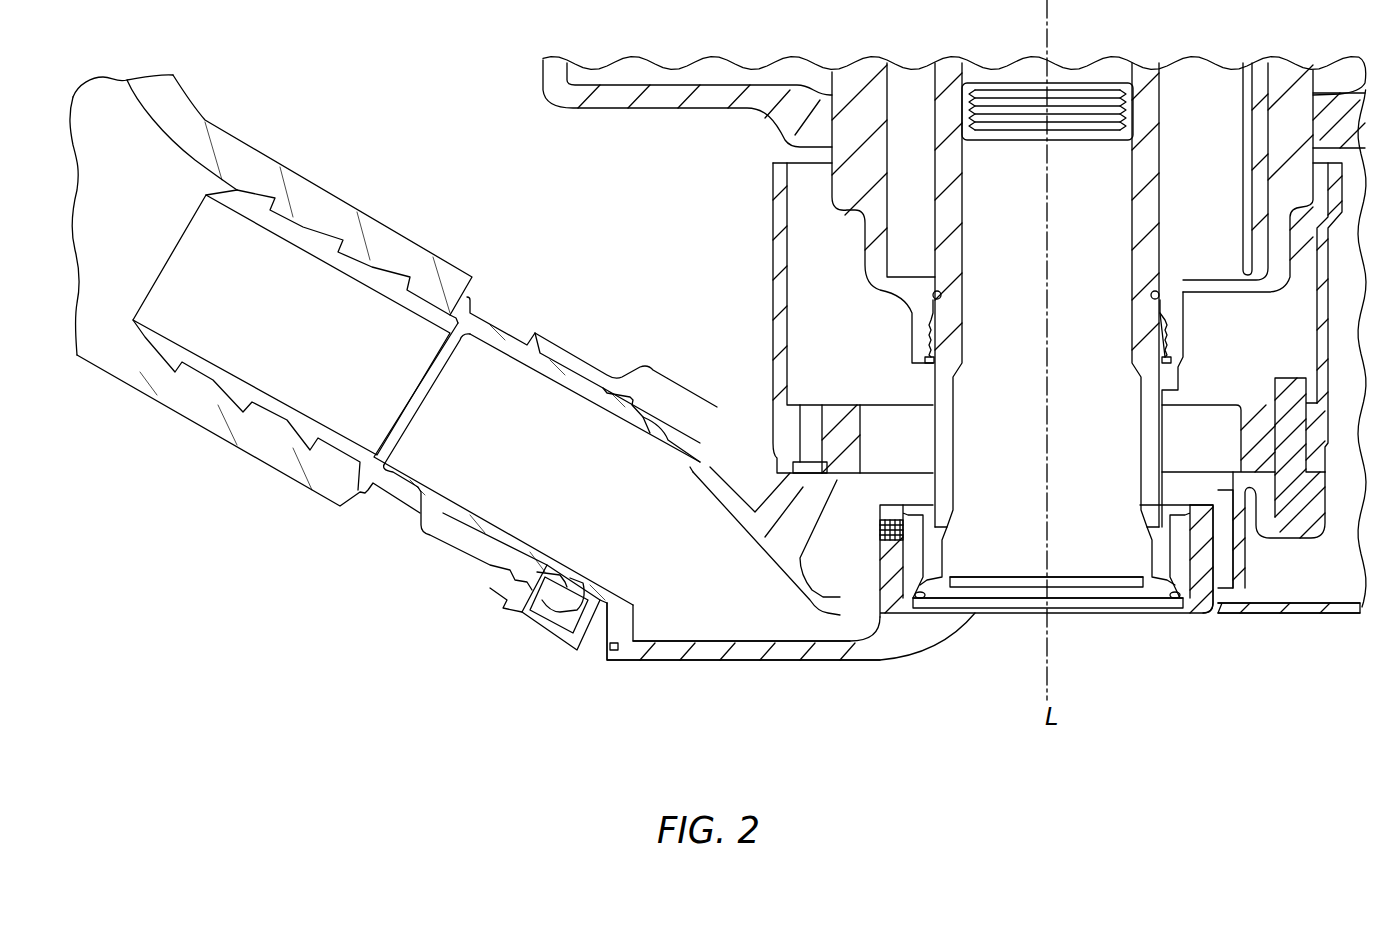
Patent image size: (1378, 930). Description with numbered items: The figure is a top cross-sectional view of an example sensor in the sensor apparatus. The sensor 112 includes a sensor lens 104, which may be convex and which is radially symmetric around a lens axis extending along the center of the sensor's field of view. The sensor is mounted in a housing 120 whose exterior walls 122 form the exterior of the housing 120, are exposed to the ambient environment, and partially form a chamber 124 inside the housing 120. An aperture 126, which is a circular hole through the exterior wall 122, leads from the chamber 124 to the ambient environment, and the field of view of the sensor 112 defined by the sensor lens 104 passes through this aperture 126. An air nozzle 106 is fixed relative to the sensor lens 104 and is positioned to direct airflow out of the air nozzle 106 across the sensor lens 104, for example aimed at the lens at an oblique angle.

The sensor lens 104 is at (1097, 640).
The air nozzle 106 is at (785, 622).
The sensor 112 is at (1186, 346).
The housing 120 is at (1305, 618).
The exterior wall 122 is at (1252, 615).
The chamber 124 is at (1322, 573).
The aperture 126 is at (1213, 612).